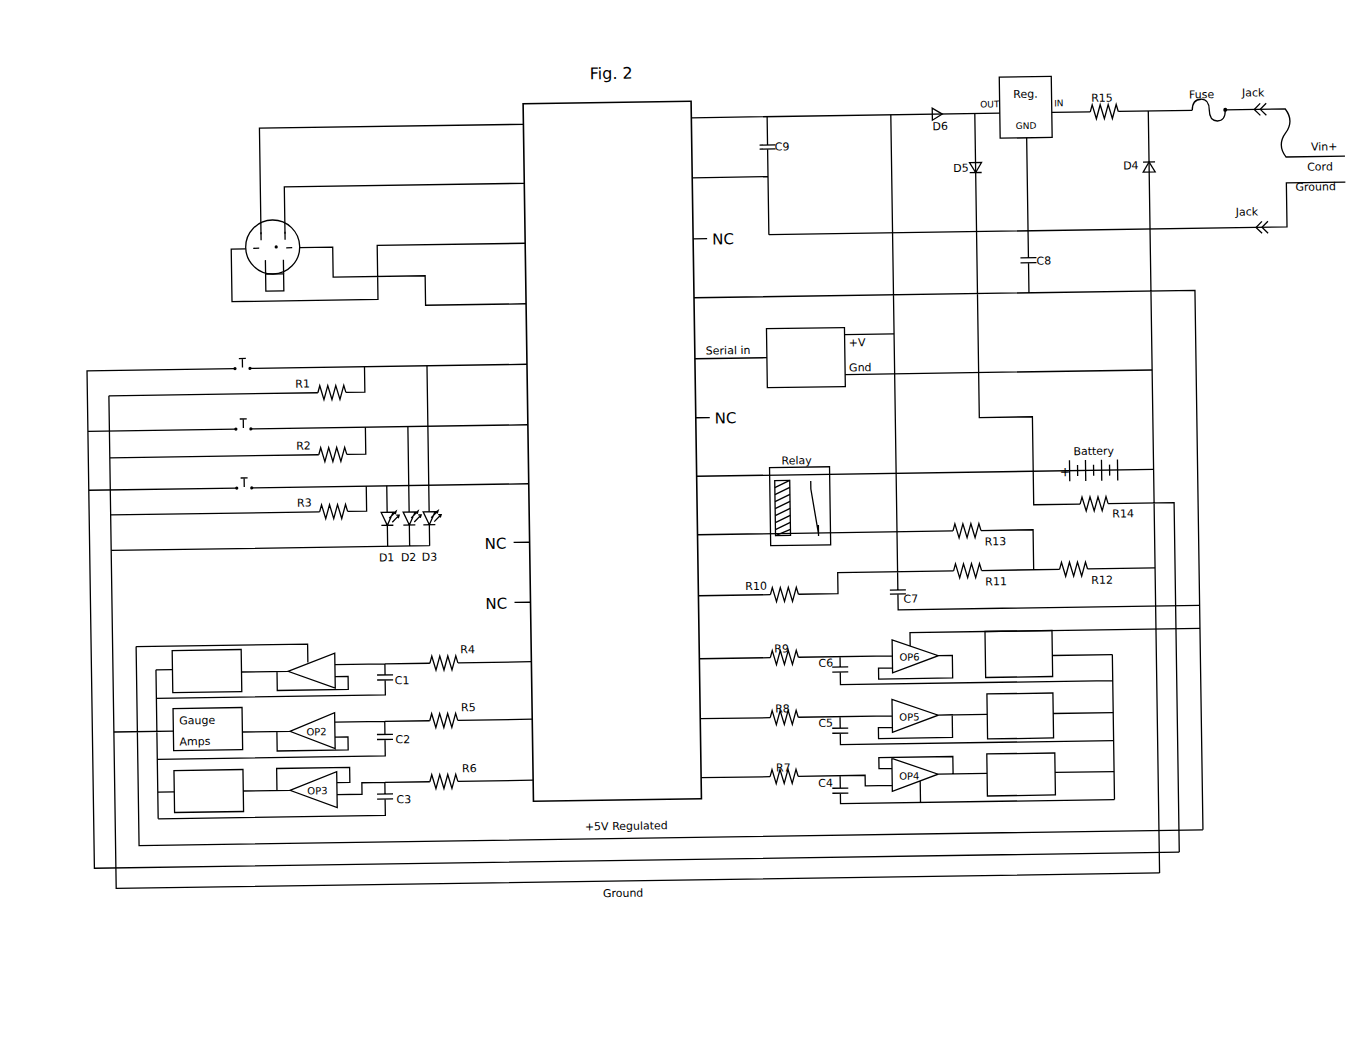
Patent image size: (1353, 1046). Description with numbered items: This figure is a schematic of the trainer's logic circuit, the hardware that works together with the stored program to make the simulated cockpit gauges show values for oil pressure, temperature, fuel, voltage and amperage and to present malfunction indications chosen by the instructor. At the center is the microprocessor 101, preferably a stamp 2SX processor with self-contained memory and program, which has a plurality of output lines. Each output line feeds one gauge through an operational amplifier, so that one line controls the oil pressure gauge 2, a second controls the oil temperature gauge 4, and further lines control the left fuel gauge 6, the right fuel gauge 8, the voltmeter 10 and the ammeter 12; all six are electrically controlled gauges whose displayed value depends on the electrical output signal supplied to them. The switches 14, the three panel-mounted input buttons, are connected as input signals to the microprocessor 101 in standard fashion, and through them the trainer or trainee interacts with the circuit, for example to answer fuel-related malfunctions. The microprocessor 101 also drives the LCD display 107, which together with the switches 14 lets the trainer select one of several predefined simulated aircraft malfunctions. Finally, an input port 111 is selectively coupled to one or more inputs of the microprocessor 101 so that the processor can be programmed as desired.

The microprocessor 101 is at (582, 94).
The LCD display 107 is at (862, 261).
The input port 111 is at (266, 227).
The switches 14 is at (250, 472).
The oil pressure gauge 2 is at (237, 638).
The oil temperature gauge 4 is at (313, 641).
The left fuel gauge 6 is at (208, 806).
The right fuel gauge 8 is at (1013, 805).
The voltmeter 10 is at (1051, 695).
The ammeter 12 is at (1051, 637).